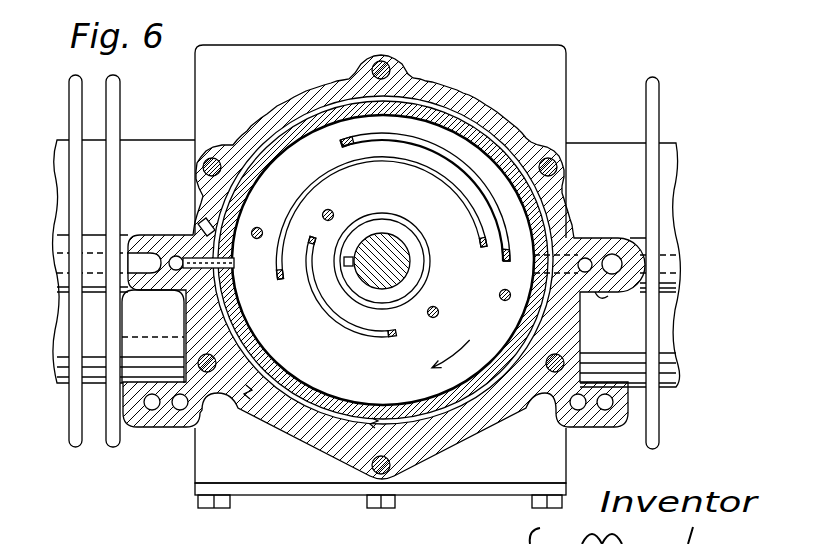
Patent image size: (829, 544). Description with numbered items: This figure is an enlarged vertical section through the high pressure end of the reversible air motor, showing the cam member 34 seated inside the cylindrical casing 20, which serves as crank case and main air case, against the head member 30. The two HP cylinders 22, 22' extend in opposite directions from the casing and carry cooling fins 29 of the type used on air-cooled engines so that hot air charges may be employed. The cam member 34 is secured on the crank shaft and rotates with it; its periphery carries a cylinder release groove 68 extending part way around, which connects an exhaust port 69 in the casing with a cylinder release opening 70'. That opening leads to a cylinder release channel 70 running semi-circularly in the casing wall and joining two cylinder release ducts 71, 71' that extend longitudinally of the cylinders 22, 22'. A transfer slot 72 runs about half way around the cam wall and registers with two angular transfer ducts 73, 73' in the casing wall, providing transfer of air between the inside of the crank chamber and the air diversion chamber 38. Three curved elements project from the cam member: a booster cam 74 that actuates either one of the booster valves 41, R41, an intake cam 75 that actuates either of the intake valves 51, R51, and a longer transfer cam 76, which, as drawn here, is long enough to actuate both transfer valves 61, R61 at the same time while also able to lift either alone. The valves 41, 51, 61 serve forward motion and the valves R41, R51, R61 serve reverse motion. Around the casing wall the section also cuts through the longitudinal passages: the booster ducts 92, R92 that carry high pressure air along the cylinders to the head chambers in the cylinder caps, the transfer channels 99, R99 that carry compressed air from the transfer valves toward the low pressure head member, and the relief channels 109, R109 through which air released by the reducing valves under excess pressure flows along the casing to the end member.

The casing 20 is at (566, 88).
The HP cylinder 22 is at (124, 251).
The HP cylinder 22' is at (607, 251).
The cooling fins 29 is at (110, 104).
The head member 30 is at (490, 120).
The cam member 34 is at (274, 143).
The air diversion chamber 38 is at (383, 260).
The booster valve 41 is at (333, 213).
The intake valve 51 is at (263, 224).
The transfer valve 61 is at (283, 270).
The booster valve R41 is at (438, 302).
The intake valve R51 is at (505, 301).
The transfer valve R61 is at (480, 243).
The cylinder release groove 68 is at (487, 380).
The exhaust port 69 is at (206, 224).
The cylinder release channel 70 is at (379, 412).
The cylinder release opening 70' is at (227, 263).
The cylinder release duct 71 is at (155, 281).
The cylinder release duct 71' is at (611, 310).
The transfer slot 72 is at (322, 412).
The transfer duct 73 is at (160, 250).
The transfer duct 73' is at (609, 247).
The booster cam 74 is at (370, 328).
The intake cam 75 is at (456, 168).
The transfer cam 76 is at (306, 336).
The booster duct 92 is at (153, 336).
The booster duct R92 is at (613, 254).
The transfer channel 99 is at (180, 410).
The relief channel 109 is at (150, 410).
The transfer channel R99 is at (576, 411).
The relief channel R109 is at (605, 411).